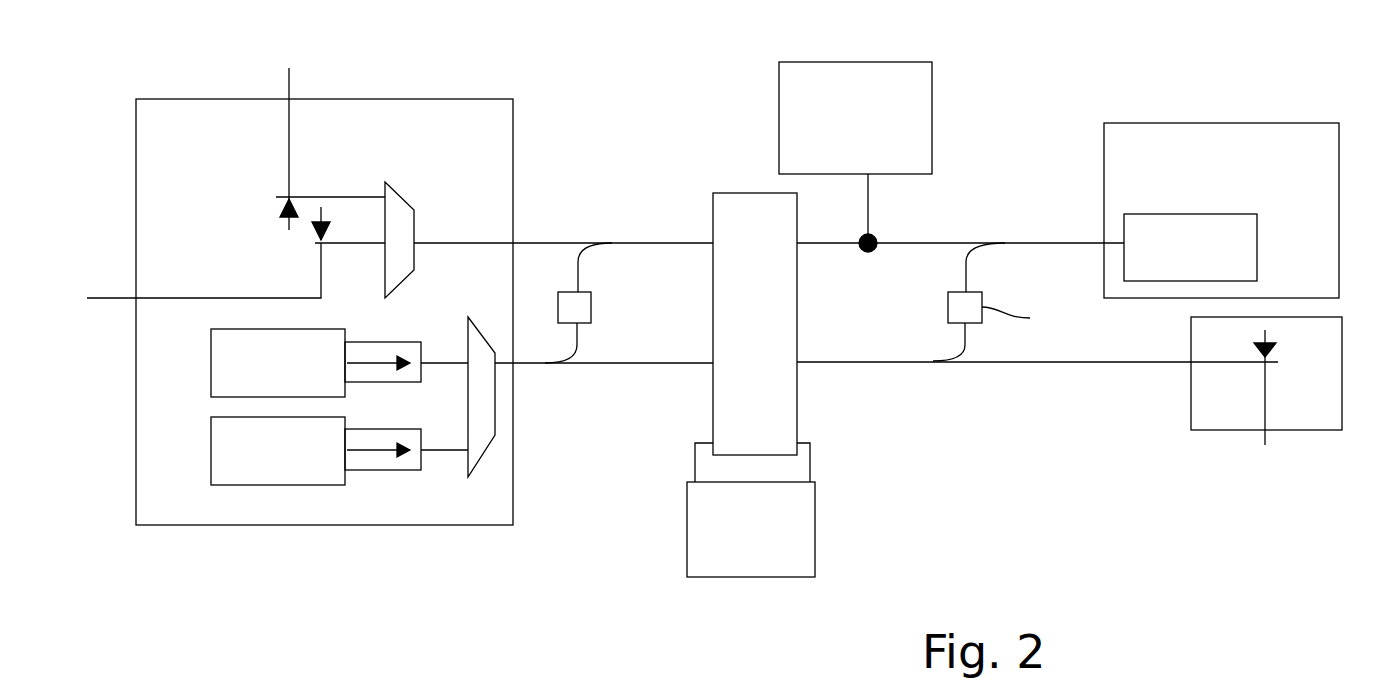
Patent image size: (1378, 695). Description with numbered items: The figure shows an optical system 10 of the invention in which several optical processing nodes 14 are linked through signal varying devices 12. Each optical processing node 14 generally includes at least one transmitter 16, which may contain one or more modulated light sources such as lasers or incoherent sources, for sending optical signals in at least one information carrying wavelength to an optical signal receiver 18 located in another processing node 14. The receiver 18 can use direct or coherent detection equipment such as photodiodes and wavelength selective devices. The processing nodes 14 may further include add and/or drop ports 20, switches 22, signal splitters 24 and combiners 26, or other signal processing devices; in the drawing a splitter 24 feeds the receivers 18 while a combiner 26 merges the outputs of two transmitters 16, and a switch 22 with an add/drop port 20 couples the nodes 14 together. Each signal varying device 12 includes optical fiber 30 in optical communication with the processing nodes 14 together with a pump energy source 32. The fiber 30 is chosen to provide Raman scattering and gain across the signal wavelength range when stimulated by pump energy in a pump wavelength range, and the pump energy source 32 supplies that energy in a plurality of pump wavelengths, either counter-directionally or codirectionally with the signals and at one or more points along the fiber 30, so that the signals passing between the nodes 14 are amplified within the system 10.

The optical system 10 is at (546, 573).
The signal varying device 12 is at (614, 391).
The optical processing node 14 is at (373, 97).
The transmitter 16 is at (211, 428).
The optical signal receiver 18 is at (243, 222).
The add/drop port 20 is at (875, 235).
The switch 22 is at (735, 193).
The signal splitter 24 is at (403, 172).
The combiner 26 is at (495, 435).
The optical fiber 30 is at (613, 242).
The pump energy source 32 is at (593, 302).